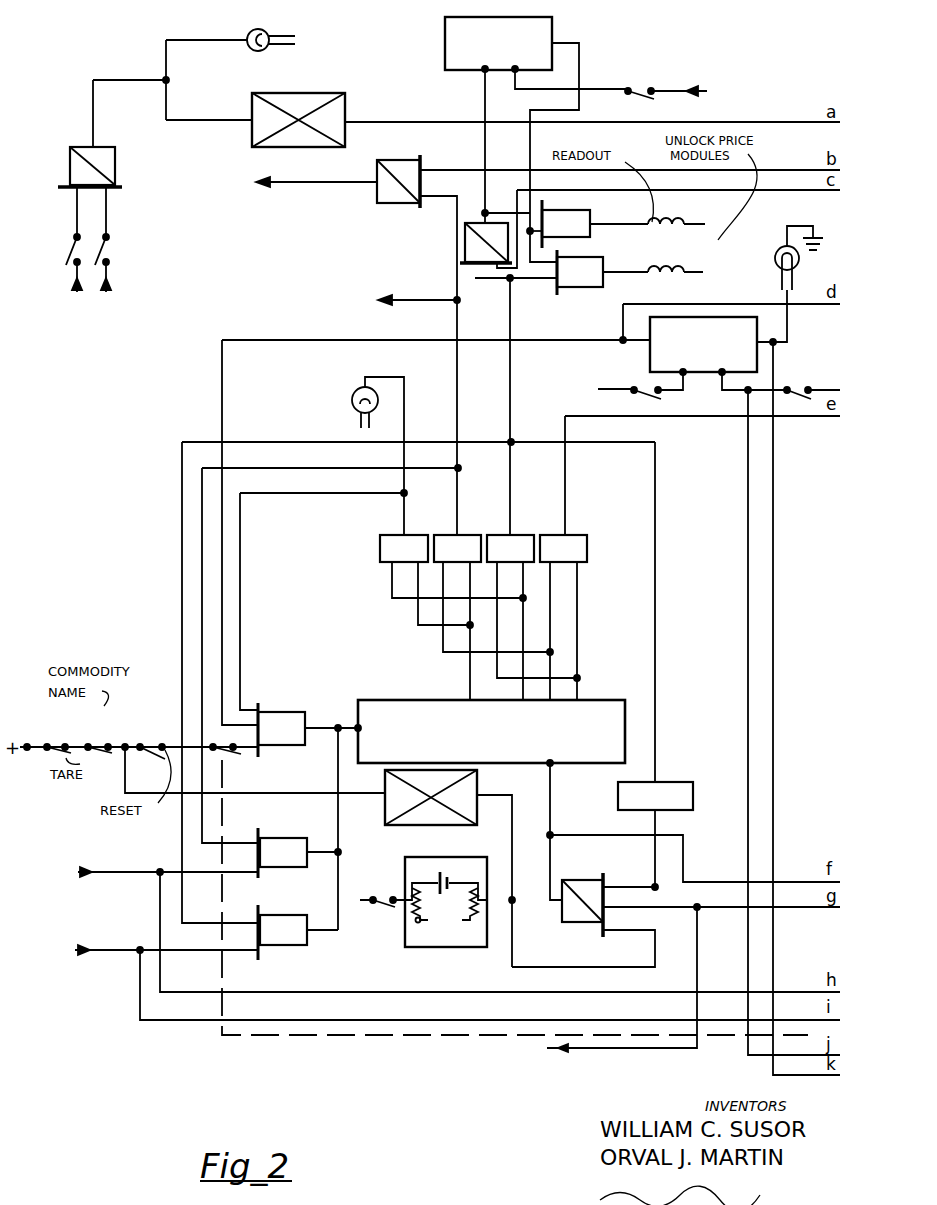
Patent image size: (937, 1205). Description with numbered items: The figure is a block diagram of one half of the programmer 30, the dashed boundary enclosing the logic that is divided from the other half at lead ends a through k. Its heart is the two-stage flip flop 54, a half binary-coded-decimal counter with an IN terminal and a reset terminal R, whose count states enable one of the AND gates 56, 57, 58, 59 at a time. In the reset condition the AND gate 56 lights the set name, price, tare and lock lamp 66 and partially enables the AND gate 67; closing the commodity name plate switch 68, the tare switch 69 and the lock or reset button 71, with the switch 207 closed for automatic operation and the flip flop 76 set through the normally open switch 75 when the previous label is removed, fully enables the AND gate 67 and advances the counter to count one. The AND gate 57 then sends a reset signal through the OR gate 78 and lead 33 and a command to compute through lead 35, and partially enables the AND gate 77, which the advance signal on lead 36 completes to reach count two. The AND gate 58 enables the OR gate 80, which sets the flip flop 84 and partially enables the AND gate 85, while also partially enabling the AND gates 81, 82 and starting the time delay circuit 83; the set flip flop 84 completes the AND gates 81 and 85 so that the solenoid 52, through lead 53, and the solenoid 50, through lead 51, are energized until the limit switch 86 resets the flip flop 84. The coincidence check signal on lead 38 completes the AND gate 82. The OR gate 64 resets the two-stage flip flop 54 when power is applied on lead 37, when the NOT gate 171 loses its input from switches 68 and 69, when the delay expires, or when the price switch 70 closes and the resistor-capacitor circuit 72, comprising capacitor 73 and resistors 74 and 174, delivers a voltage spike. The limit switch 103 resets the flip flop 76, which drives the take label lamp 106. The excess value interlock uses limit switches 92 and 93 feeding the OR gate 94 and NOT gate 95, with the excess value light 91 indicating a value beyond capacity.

The programmer 30 is at (206, 1032).
The lead 33 is at (306, 180).
The lead 35 is at (400, 306).
The lead 36 is at (142, 870).
The lead 37 is at (612, 1048).
The lead 38 is at (130, 950).
The solenoid 50 is at (689, 224).
The lead 51 is at (612, 227).
The solenoid 52 is at (680, 272).
The lead 53 is at (624, 283).
The two-stage flip flop 54 is at (412, 700).
The AND gate 56 is at (380, 548).
The AND gate 57 is at (452, 535).
The AND gate 58 is at (505, 535).
The AND gate 59 is at (558, 535).
The OR gate 64 is at (580, 922).
The set name, price, tare and lock lamp 66 is at (352, 397).
The AND gate 67 is at (292, 701).
The commodity name plate switch 68 is at (97, 745).
The tare switch 69 is at (58, 745).
The price switch 70 is at (386, 898).
The lock or reset button 71 is at (158, 745).
The resistor-capacitor circuit 72 is at (415, 947).
The capacitor 73 is at (452, 852).
The resistor 74 is at (412, 905).
The normally open switch 75 is at (650, 390).
The flip flop 76 is at (700, 375).
The AND gate 77 is at (270, 841).
The OR gate 78 is at (377, 188).
The OR gate 80 is at (473, 268).
The AND gate 81 is at (590, 288).
The AND gate 82 is at (272, 917).
The time delay circuit 83 is at (671, 782).
The flip flop 84 is at (445, 46).
The AND gate 85 is at (580, 210).
The limit switch 86 is at (637, 90).
The excess value light 91 is at (250, 34).
The limit switch 92 is at (69, 258).
The limit switch 93 is at (104, 250).
The OR gate 94 is at (115, 168).
The NOT gate 95 is at (280, 94).
The limit switch 103 is at (797, 388).
The take label lamp 106 is at (781, 268).
The NOT gate 171 is at (478, 787).
The resistor 174 is at (472, 912).
The switch 207 is at (235, 752).